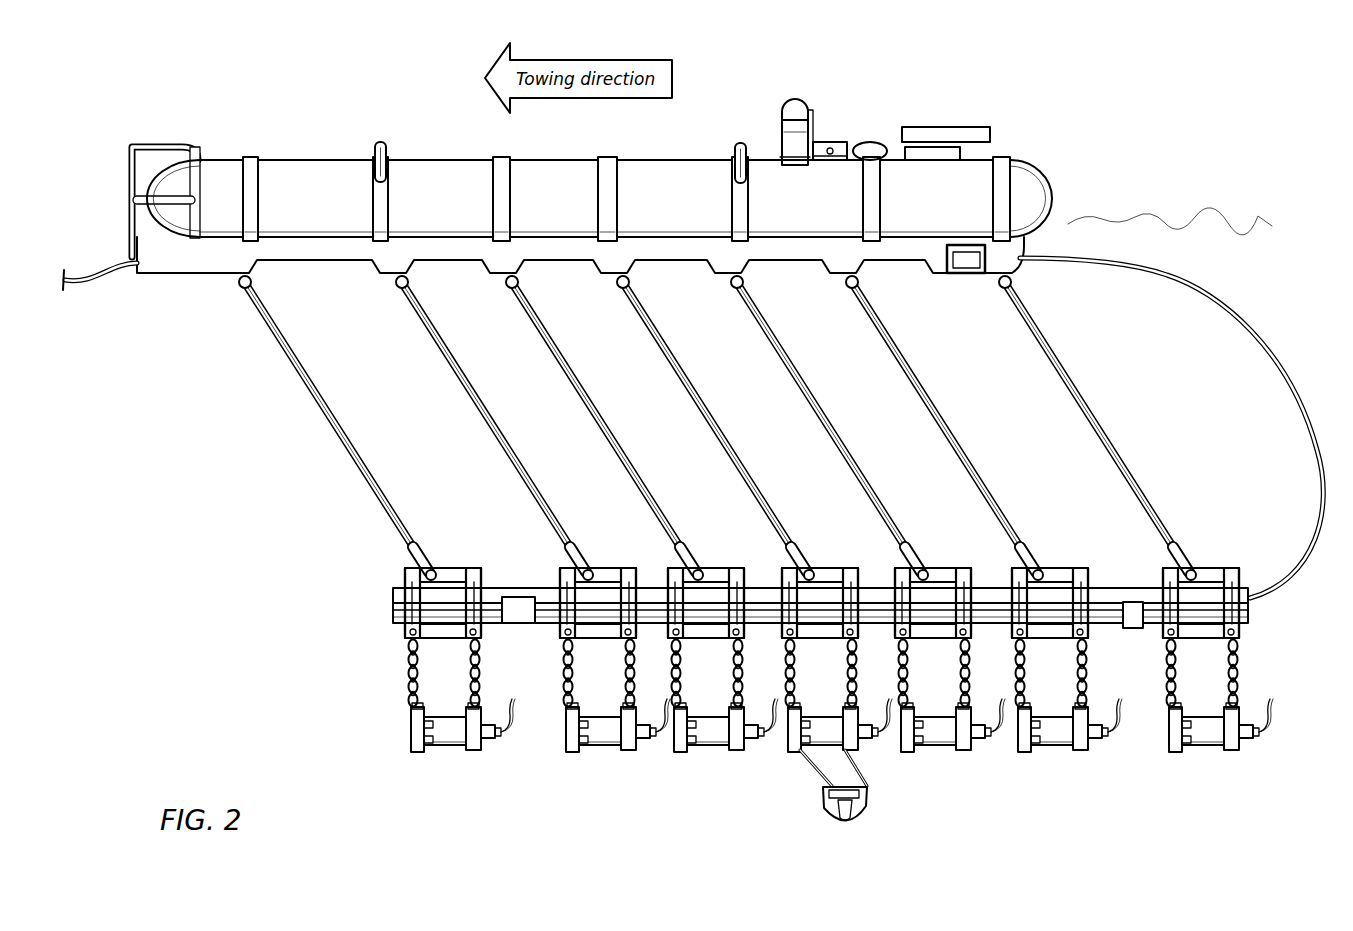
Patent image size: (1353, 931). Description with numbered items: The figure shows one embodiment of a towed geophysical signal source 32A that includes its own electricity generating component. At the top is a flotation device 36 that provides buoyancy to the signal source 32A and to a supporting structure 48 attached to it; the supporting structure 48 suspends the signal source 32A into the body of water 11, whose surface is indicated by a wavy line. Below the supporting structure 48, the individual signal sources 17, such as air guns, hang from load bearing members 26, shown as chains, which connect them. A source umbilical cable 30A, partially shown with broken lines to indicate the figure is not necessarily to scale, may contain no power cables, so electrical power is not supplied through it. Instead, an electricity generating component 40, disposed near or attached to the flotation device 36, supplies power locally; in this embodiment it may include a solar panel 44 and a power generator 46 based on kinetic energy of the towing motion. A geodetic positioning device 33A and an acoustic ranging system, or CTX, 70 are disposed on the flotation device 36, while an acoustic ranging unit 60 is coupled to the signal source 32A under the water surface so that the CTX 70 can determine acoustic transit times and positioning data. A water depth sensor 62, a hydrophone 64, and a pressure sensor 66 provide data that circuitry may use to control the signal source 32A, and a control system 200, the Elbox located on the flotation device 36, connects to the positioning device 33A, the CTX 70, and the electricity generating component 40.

The body of water 11 is at (1298, 198).
The individual signal source 17 is at (410, 737).
The load bearing member 26 is at (408, 684).
The source umbilical cable 30A is at (1164, 273).
The signal source 32A is at (304, 78).
The geodetic positioning device 33A is at (793, 100).
The flotation device 36 is at (440, 160).
The electricity generating component 40 is at (966, 274).
The solar panel 44 is at (946, 127).
The power generator 46 is at (871, 142).
The supporting structure 48 is at (326, 438).
The acoustic ranging unit 60 is at (868, 806).
The water depth sensor 62 is at (382, 624).
The hydrophone 64 is at (520, 625).
The pressure sensor 66 is at (1133, 630).
The acoustic ranging system (CTX) 70 is at (963, 153).
The control system 200 is at (831, 142).